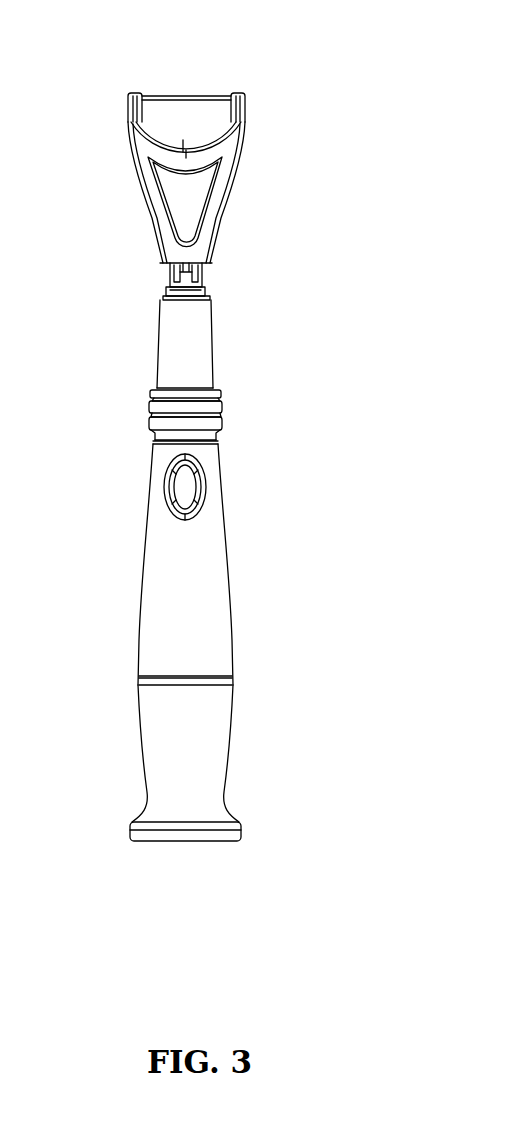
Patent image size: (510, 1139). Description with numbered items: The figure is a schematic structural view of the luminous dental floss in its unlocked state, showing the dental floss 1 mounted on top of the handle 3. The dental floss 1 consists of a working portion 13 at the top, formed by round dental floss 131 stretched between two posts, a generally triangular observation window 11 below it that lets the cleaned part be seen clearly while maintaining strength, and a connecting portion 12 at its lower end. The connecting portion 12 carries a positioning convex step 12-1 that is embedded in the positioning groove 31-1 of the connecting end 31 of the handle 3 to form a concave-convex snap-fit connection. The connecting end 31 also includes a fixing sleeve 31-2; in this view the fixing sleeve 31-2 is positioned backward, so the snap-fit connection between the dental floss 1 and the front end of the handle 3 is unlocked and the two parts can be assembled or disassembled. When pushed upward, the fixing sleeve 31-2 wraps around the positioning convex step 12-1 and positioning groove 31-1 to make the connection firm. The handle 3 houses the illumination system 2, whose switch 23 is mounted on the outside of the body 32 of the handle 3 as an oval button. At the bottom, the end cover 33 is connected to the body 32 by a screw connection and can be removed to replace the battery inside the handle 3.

The dental floss 1 is at (187, 134).
The observation window 11 is at (185, 212).
The connecting portion 12 is at (165, 258).
The positioning convex step 12-1 is at (175, 286).
The working portion 13 is at (190, 82).
The round dental floss 131 is at (185, 95).
The illumination system 2 is at (195, 481).
The switch 23 is at (210, 482).
The handle 3 is at (213, 547).
The connecting end 31 is at (263, 348).
The positioning groove 31-1 is at (210, 295).
The fixing sleeve 31-2 is at (208, 330).
The body 32 is at (204, 555).
The end cover 33 is at (205, 727).